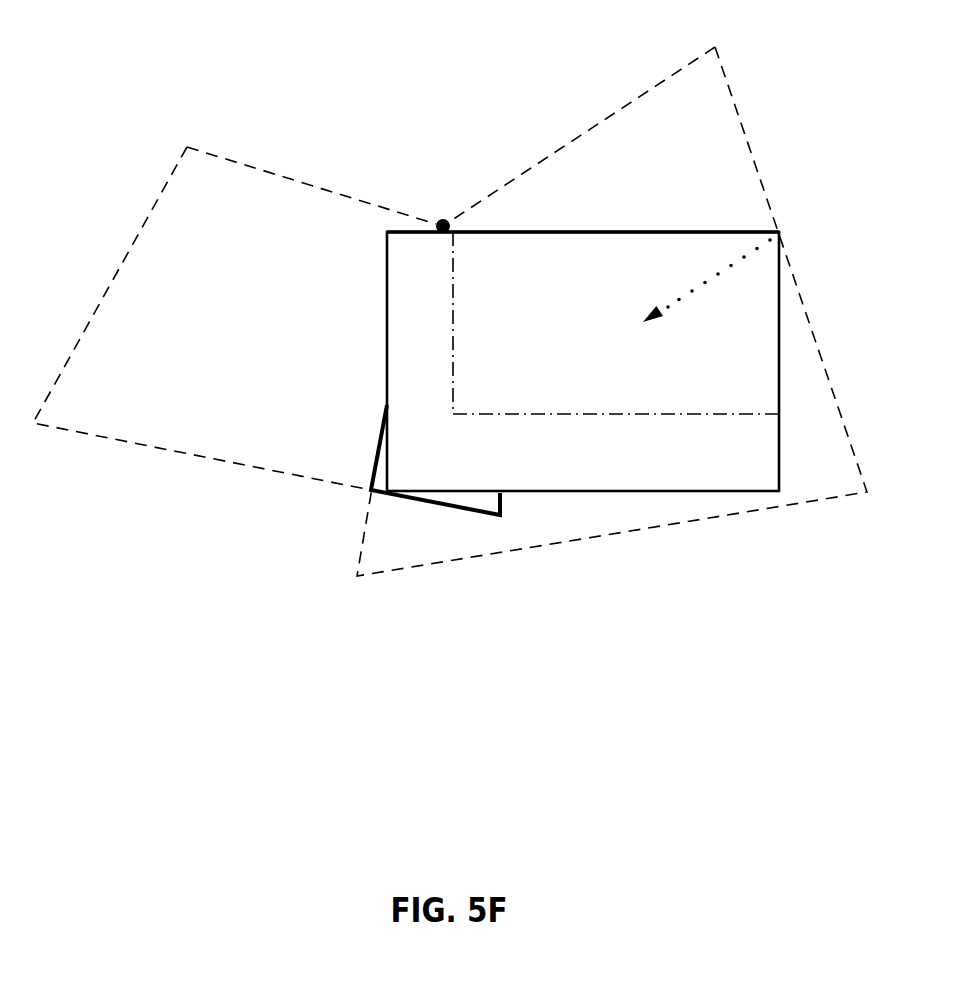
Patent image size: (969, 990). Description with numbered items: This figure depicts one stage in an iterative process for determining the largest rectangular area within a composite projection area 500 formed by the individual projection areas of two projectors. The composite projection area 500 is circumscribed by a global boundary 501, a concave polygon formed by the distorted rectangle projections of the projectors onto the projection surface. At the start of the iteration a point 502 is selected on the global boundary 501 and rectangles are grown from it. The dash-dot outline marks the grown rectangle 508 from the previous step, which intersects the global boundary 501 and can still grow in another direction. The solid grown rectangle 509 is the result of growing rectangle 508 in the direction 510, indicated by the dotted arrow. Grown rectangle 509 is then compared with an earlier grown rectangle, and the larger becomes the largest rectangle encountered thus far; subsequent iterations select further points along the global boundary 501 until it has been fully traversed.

The composite projection area 500 is at (452, 92).
The global boundary 501 is at (115, 268).
The point 502 is at (440, 219).
The grown rectangle 508 is at (706, 231).
The grown rectangle 509 is at (373, 339).
The direction 510 is at (720, 272).